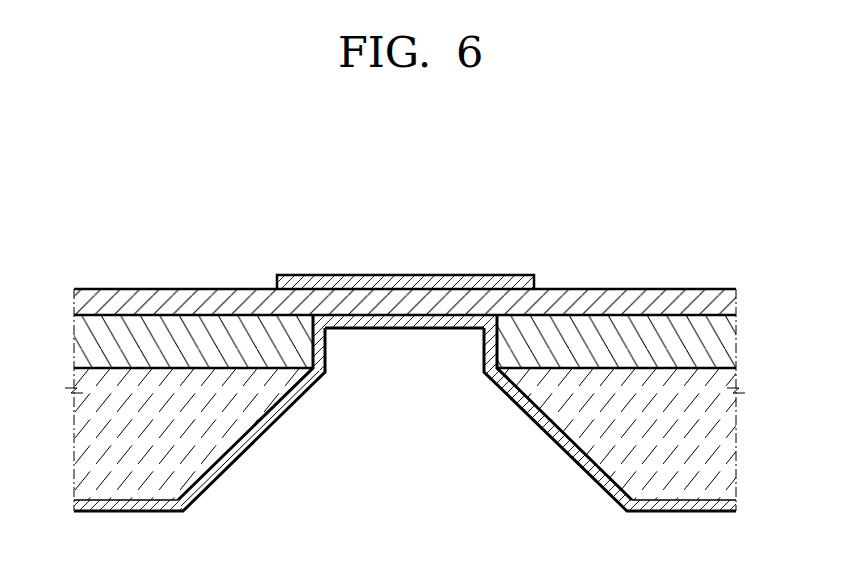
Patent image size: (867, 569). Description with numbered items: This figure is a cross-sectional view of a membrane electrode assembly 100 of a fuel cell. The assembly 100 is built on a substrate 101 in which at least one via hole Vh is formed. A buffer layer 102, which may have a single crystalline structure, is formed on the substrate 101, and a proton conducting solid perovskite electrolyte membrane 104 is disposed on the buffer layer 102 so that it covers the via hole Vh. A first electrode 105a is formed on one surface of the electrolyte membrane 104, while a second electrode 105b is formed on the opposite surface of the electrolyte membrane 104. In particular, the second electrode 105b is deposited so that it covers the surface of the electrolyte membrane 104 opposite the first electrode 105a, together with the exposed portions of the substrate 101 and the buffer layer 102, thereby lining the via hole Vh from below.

The membrane electrode assembly 100 is at (716, 237).
The substrate 101 is at (731, 422).
The buffer layer 102 is at (731, 341).
The proton conducting solid perovskite electrolyte membrane 104 is at (731, 305).
The first electrode 105a is at (414, 275).
The second electrode 105b is at (731, 505).
The via hole Vh is at (407, 372).